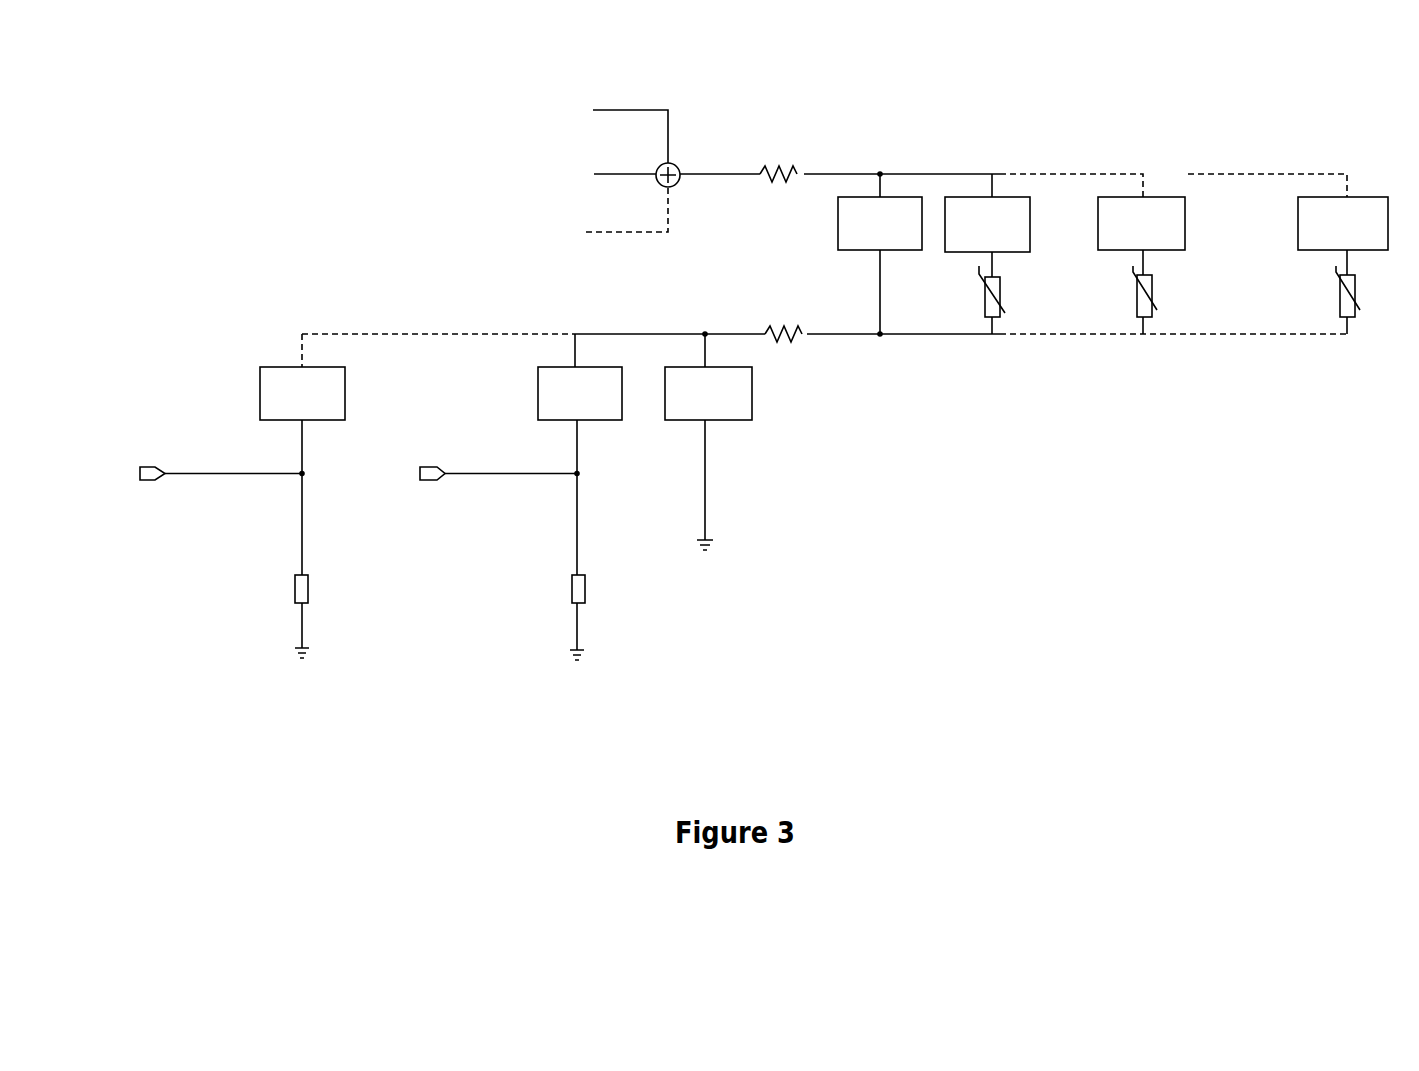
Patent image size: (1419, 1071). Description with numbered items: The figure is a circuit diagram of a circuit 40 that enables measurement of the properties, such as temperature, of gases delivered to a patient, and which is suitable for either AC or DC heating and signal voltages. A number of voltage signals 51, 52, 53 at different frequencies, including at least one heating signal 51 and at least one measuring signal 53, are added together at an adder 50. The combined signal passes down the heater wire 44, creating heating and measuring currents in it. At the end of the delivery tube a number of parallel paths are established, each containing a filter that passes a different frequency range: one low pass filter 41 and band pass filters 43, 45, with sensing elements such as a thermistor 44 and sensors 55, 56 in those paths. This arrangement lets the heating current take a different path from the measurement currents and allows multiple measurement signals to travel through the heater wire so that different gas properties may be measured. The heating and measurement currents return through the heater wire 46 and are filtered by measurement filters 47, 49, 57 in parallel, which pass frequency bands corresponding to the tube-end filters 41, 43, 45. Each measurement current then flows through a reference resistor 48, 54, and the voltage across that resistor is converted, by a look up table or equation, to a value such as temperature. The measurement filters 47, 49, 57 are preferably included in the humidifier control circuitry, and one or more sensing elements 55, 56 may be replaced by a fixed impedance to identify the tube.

The circuit 40 is at (788, 91).
The low pass filter 41 is at (880, 254).
The band pass filter 43 is at (987, 213).
The heater wire 44 is at (917, 250).
The band pass filter 45 is at (1141, 223).
The heater wire 46 is at (783, 344).
The measurement filter 47 is at (580, 377).
The reference resistor 48 is at (476, 542).
The measurement filter 49 is at (302, 393).
The adder 50 is at (675, 168).
The heating signal 51 is at (570, 127).
The voltage signal 52 is at (549, 169).
The measuring signal 53 is at (549, 213).
The reference resistor 54 is at (196, 542).
The sensing element 55 is at (1168, 292).
The sensing element 56 is at (1373, 292).
The measurement filter 57 is at (708, 444).